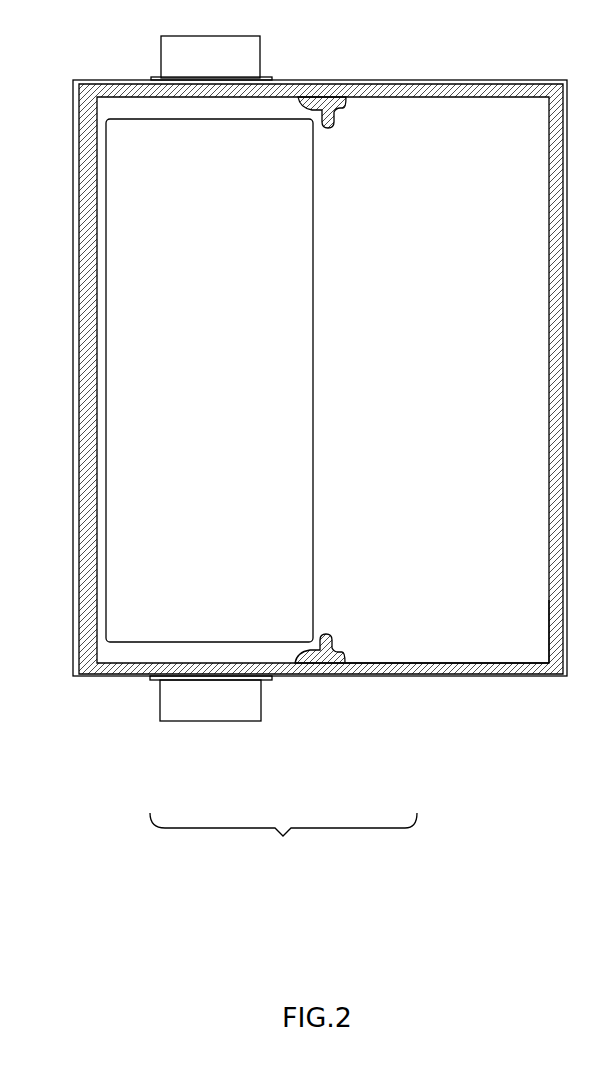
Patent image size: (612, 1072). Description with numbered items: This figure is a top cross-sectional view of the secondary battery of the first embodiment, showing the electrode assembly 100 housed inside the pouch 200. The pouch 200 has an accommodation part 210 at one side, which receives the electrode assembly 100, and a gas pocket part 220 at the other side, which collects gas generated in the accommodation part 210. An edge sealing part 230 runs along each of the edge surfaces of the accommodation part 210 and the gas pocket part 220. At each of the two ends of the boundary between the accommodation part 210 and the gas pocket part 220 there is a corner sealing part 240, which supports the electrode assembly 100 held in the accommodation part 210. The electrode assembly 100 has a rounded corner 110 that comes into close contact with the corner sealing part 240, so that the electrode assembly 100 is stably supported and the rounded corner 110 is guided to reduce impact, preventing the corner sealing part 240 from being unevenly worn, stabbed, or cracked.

The electrode assembly 100 is at (108, 530).
The rounded corner 110 is at (137, 128).
The pouch 200 is at (283, 838).
The accommodation part 210 is at (133, 653).
The gas pocket part 220 is at (393, 643).
The edge sealing part 230 is at (557, 678).
The corner sealing part 240 is at (327, 662).